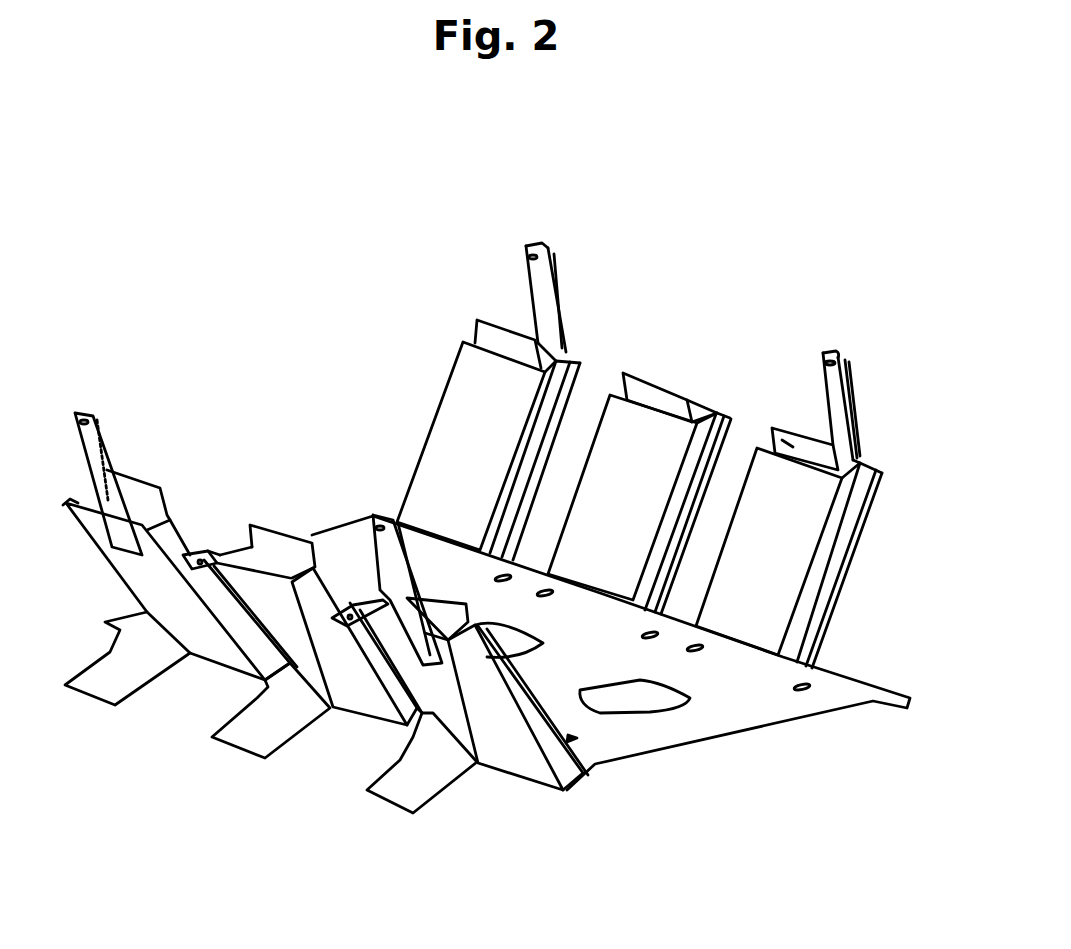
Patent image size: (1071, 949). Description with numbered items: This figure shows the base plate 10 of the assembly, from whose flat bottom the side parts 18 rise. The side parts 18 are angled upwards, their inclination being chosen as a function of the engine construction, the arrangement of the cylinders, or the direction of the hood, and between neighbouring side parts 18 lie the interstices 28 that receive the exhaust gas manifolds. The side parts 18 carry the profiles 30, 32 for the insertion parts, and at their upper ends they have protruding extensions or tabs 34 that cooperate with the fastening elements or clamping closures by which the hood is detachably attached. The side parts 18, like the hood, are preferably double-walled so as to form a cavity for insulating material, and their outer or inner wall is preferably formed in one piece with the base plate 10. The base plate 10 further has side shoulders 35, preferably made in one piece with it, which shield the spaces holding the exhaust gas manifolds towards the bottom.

The base plate 10 is at (668, 727).
The side parts 18 is at (475, 395).
The interstices 28 is at (558, 465).
The profile 30 is at (721, 439).
The profile 32 is at (773, 430).
The tabs 34 is at (378, 594).
The side shoulders 35 is at (105, 678).